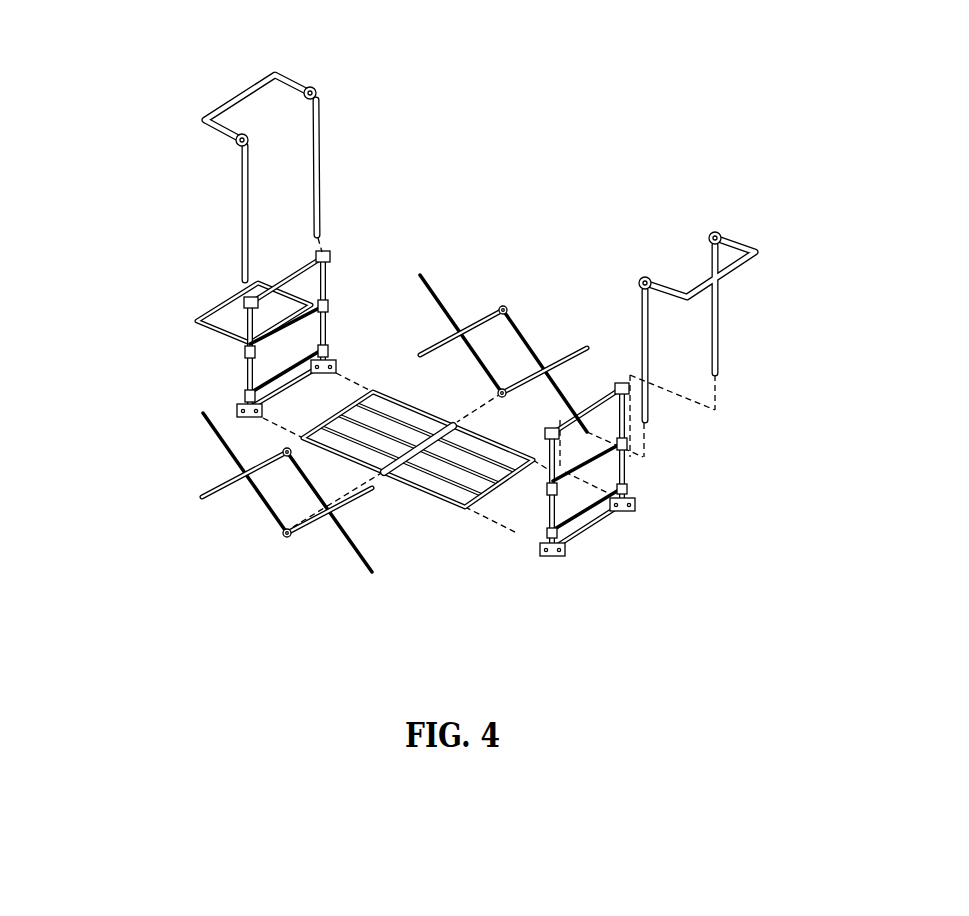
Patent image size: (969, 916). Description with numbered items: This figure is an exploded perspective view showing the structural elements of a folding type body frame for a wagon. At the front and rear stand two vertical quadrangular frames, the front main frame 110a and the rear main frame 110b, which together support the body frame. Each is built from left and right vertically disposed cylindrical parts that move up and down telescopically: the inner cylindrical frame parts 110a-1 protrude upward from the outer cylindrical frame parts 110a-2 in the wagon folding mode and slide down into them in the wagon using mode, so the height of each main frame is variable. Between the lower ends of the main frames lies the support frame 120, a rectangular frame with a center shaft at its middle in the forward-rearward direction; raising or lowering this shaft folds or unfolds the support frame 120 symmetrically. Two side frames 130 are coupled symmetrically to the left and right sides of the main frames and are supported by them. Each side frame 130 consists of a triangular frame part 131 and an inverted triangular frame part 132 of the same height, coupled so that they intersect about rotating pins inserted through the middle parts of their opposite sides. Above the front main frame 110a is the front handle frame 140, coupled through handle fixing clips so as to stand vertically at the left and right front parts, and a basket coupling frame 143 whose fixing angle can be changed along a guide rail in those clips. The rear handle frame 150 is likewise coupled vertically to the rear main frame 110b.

The front main frame 110a is at (186, 327).
The inner cylindrical frame parts 110a-1 is at (248, 317).
The outer cylindrical frame parts 110a-2 is at (252, 376).
The rear main frame 110b is at (597, 527).
The support frame 120 is at (432, 495).
The side frames 130 is at (352, 408).
The triangular frame part 131 is at (227, 490).
The inverted triangular frame part 132 is at (273, 515).
The front handle frame 140 is at (317, 188).
The basket coupling frame 143 is at (225, 303).
The rear handle frame 150 is at (715, 317).